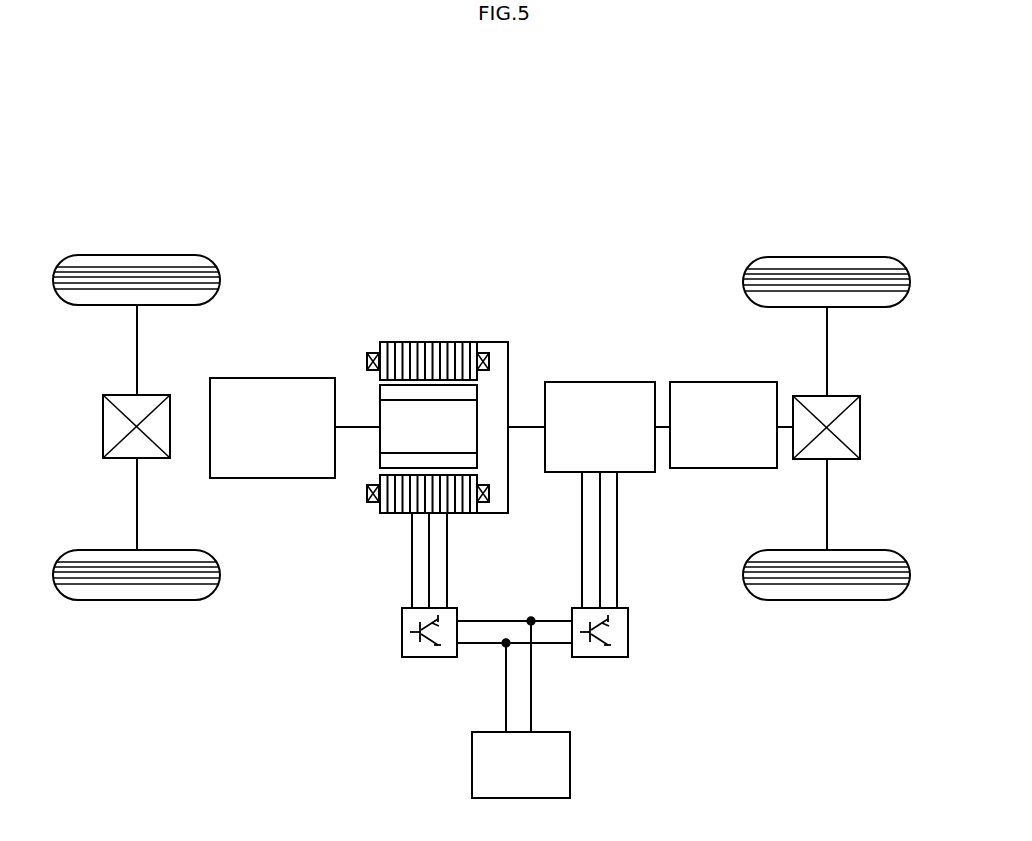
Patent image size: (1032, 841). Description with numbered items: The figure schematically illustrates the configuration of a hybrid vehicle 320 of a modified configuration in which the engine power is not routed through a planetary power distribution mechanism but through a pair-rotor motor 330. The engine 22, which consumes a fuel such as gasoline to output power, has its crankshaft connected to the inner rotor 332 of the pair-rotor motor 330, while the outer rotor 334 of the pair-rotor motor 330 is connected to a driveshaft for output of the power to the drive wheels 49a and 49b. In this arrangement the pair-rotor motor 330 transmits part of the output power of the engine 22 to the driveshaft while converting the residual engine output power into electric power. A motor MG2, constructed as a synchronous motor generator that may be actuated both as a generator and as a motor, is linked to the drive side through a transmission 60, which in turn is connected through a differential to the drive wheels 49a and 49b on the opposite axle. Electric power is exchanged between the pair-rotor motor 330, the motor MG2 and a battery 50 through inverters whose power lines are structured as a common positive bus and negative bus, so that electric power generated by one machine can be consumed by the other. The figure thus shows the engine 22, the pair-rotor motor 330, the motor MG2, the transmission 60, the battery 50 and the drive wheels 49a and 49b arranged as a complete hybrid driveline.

The hybrid vehicle 320 is at (500, 150).
The engine 22 is at (270, 478).
The pair-rotor motor 330 is at (365, 212).
The inner rotor 332 is at (378, 413).
The outer rotor 334 is at (428, 343).
The motor MG2 is at (600, 382).
The transmission 60 is at (692, 382).
The drive wheel 49a is at (827, 258).
The drive wheel 49b is at (827, 600).
The battery 50 is at (570, 762).